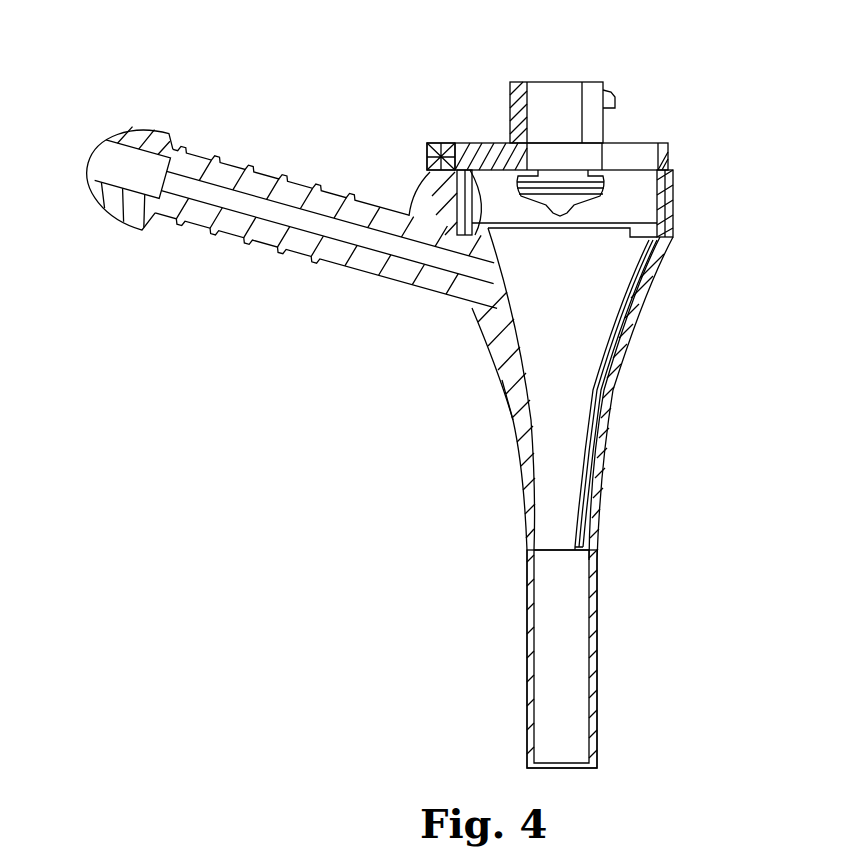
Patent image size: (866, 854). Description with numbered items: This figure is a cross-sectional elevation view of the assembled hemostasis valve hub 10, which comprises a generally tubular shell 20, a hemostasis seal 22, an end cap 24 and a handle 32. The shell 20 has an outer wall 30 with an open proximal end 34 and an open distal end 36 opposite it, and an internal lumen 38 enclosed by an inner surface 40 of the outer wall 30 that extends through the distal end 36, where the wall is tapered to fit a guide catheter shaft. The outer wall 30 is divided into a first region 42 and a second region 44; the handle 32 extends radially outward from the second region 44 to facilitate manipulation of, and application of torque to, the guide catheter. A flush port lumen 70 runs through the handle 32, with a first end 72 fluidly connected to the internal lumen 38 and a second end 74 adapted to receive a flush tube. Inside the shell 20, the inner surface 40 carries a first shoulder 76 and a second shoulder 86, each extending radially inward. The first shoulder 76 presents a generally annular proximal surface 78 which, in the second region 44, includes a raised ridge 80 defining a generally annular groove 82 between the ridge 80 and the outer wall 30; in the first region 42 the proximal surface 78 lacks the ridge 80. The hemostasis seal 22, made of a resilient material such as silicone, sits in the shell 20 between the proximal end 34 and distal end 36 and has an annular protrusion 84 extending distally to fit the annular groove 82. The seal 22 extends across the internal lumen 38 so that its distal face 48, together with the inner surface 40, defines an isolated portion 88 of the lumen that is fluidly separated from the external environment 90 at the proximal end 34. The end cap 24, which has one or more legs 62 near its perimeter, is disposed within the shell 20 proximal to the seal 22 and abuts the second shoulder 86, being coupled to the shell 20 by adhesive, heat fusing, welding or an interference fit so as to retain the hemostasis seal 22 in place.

The hemostasis valve hub 10 is at (710, 46).
The shell 20 is at (714, 525).
The hemostasis seal 22 is at (673, 204).
The end cap 24 is at (718, 85).
The outer wall 30 is at (518, 433).
The handle 32 is at (180, 142).
The proximal end 34 is at (670, 154).
The distal end 36 is at (578, 750).
The internal lumen 38 is at (570, 435).
The inner surface 40 is at (535, 373).
The first region 42 is at (622, 352).
The second region 44 is at (508, 388).
The distal face 48 is at (611, 243).
The legs 62 is at (427, 160).
The flush port lumen 70 is at (263, 208).
The first end 72 is at (458, 300).
The second end 74 is at (120, 178).
The first shoulder 76 is at (503, 241).
The proximal surface 78 is at (496, 190).
The raised ridge 80 is at (472, 225).
The annular groove 82 is at (475, 262).
The annular protrusion 84 is at (418, 203).
The second shoulder 86 is at (448, 185).
The isolated portion 88 is at (548, 341).
The external environment 90 is at (575, 53).